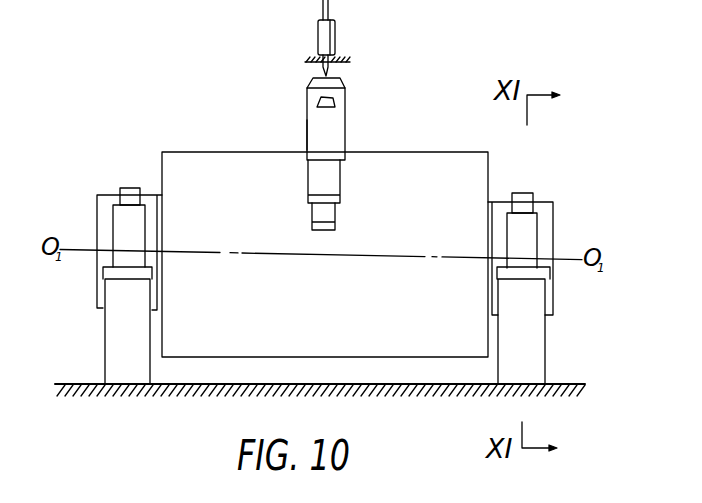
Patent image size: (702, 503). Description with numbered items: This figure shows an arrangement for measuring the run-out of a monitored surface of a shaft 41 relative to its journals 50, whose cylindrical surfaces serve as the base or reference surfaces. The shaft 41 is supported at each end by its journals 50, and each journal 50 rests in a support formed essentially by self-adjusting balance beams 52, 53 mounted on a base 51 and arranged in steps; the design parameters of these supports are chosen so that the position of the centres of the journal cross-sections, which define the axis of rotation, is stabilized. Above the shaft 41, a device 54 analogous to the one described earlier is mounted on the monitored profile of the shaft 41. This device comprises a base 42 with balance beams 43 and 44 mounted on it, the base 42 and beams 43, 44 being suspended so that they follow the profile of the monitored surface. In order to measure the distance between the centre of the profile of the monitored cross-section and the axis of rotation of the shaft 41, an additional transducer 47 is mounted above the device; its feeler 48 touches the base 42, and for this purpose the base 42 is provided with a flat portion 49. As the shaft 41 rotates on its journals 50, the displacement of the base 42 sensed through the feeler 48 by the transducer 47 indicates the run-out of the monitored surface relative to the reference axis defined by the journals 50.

The shaft 41 is at (428, 163).
The base 42 is at (341, 128).
The balance beam 43 is at (332, 182).
The balance beam 44 is at (328, 218).
The additional transducer 47 is at (334, 44).
The feeler 48 is at (315, 62).
The flat portion 49 is at (338, 80).
The journals 50 is at (108, 202).
The base 51 is at (115, 328).
The self-adjusting balance beam 52 is at (523, 243).
The self-adjusting balance beam 53 is at (520, 203).
The device 54 is at (306, 134).